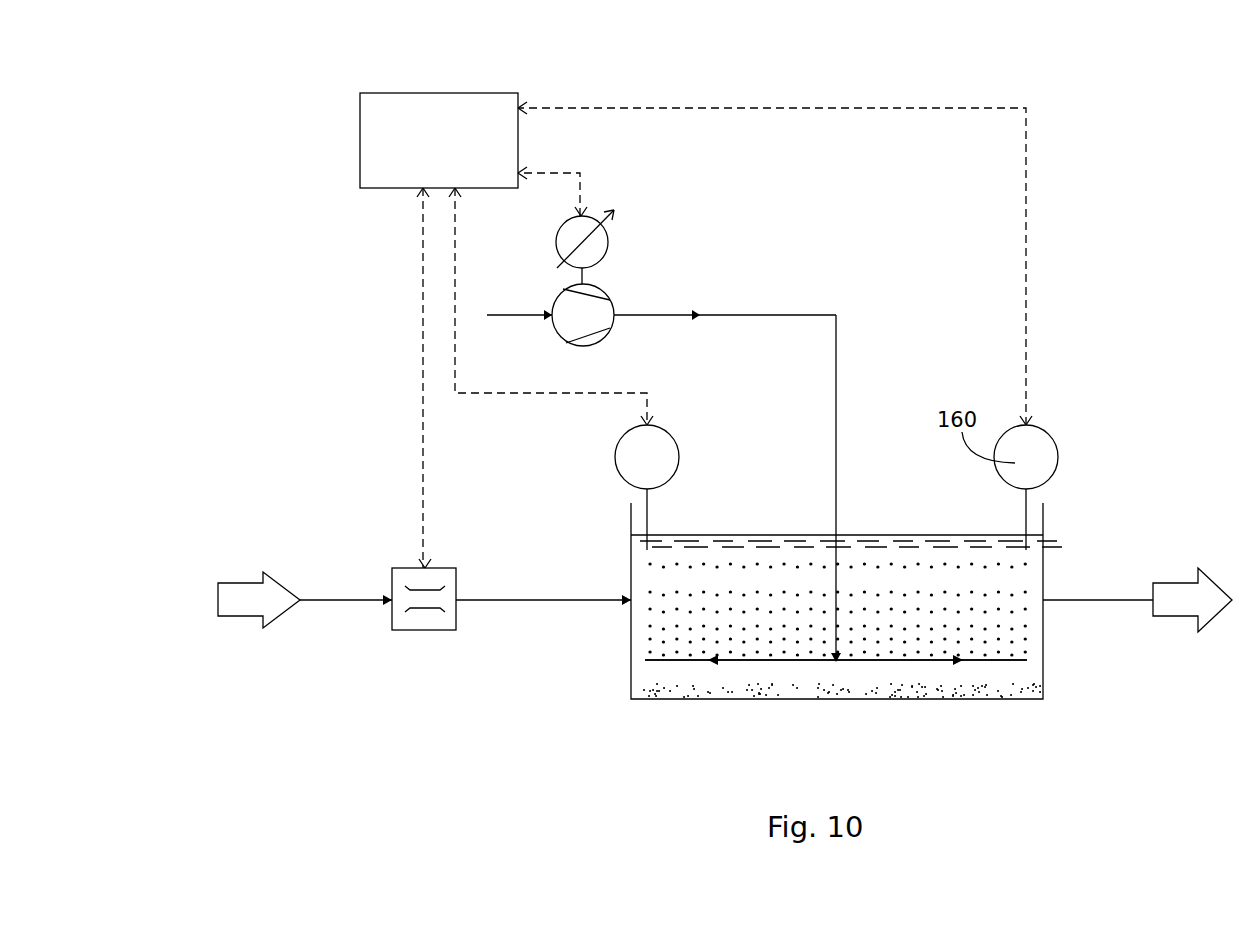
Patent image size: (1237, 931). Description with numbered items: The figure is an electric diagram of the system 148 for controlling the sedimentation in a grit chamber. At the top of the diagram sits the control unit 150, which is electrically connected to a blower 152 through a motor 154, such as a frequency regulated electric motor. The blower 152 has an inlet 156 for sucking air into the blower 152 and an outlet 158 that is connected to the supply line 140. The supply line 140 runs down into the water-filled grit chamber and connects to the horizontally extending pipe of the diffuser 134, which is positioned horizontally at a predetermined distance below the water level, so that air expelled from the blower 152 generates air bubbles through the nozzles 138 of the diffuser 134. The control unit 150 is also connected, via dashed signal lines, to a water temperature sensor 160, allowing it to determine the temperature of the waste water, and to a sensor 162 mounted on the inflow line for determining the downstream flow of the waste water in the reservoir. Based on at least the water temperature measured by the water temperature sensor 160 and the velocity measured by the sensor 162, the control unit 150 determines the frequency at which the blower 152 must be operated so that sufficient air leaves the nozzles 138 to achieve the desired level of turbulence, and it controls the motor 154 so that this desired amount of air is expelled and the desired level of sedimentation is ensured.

The system 148 is at (268, 216).
The control unit 150 is at (490, 108).
The blower 152 is at (587, 305).
The motor 154 is at (598, 233).
The inlet 156 is at (512, 315).
The outlet 158 is at (670, 318).
The supply line 140 is at (837, 510).
The water temperature sensor 160 is at (668, 470).
The nozzles 138 is at (690, 610).
The diffuser 134 is at (920, 660).
The sensor 162 is at (398, 580).